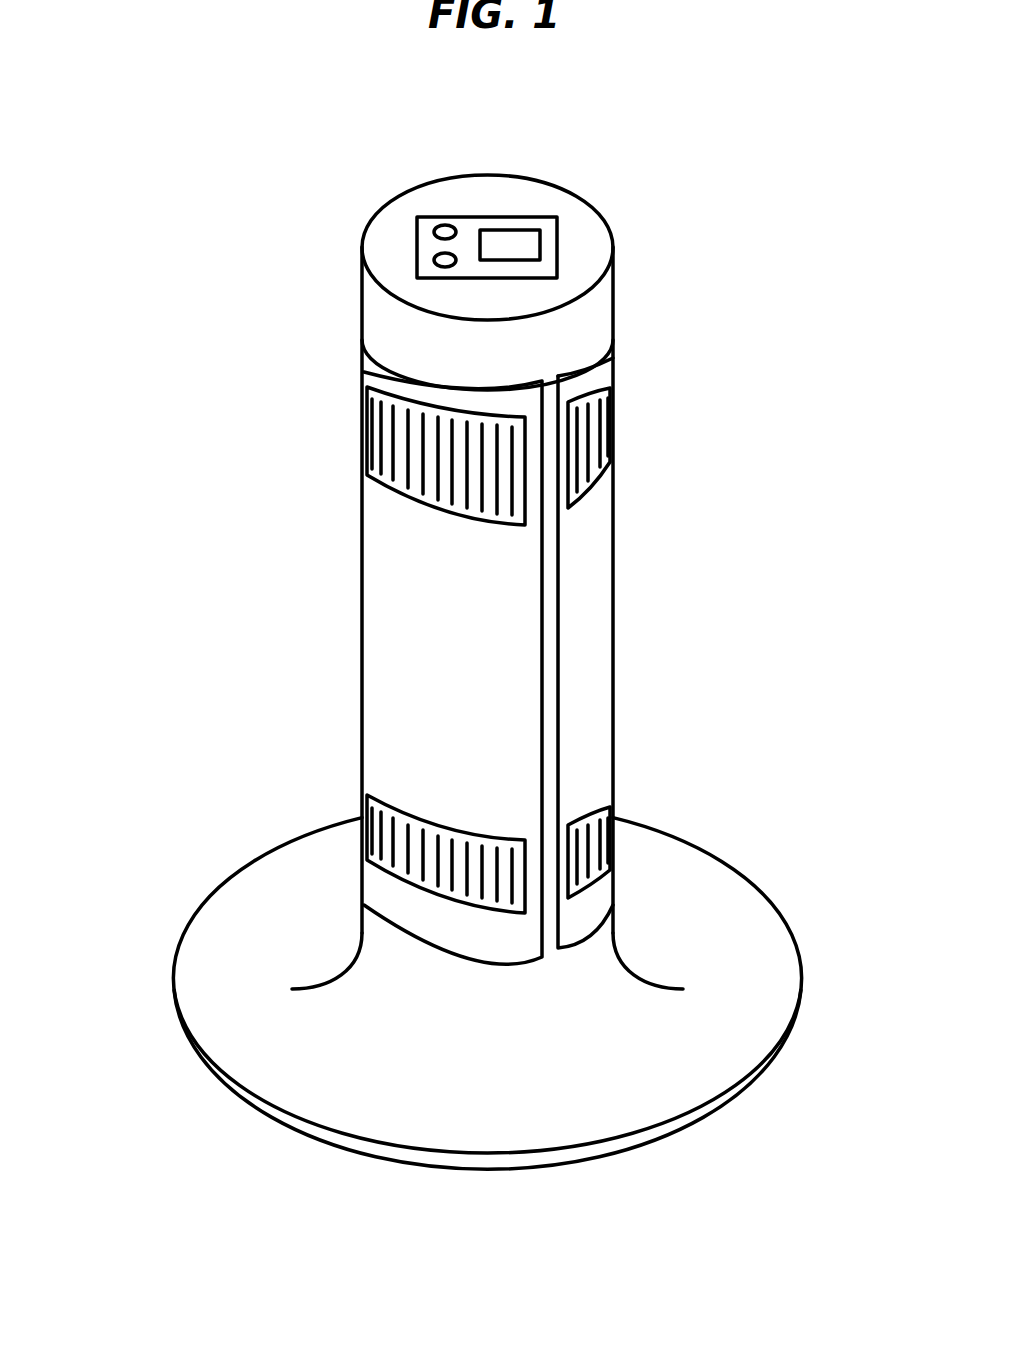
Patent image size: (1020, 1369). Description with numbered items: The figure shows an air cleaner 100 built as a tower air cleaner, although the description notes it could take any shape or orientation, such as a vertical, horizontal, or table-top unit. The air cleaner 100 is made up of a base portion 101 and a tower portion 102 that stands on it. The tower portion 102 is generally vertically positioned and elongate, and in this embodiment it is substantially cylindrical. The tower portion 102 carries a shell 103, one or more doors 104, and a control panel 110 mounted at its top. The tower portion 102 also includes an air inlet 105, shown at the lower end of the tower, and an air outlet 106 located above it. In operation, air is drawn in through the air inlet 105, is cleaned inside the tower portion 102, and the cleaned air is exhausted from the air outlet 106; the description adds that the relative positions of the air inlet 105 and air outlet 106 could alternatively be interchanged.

The air cleaner 100 is at (192, 1198).
The base portion 101 is at (193, 962).
The tower portion 102 is at (560, 529).
The shell 103 is at (587, 317).
The door 104 is at (388, 640).
The air inlet 105 is at (362, 808).
The air outlet 106 is at (358, 413).
The control panel 110 is at (510, 215).